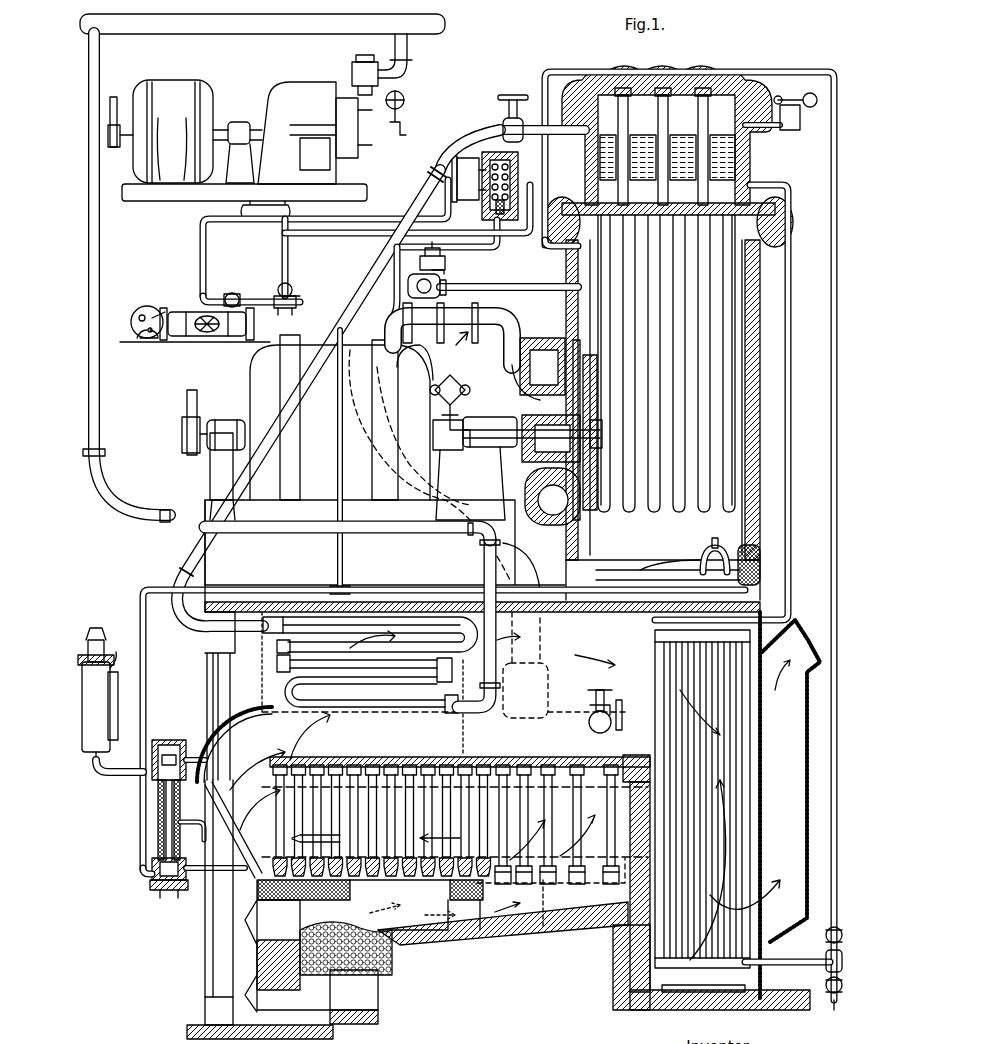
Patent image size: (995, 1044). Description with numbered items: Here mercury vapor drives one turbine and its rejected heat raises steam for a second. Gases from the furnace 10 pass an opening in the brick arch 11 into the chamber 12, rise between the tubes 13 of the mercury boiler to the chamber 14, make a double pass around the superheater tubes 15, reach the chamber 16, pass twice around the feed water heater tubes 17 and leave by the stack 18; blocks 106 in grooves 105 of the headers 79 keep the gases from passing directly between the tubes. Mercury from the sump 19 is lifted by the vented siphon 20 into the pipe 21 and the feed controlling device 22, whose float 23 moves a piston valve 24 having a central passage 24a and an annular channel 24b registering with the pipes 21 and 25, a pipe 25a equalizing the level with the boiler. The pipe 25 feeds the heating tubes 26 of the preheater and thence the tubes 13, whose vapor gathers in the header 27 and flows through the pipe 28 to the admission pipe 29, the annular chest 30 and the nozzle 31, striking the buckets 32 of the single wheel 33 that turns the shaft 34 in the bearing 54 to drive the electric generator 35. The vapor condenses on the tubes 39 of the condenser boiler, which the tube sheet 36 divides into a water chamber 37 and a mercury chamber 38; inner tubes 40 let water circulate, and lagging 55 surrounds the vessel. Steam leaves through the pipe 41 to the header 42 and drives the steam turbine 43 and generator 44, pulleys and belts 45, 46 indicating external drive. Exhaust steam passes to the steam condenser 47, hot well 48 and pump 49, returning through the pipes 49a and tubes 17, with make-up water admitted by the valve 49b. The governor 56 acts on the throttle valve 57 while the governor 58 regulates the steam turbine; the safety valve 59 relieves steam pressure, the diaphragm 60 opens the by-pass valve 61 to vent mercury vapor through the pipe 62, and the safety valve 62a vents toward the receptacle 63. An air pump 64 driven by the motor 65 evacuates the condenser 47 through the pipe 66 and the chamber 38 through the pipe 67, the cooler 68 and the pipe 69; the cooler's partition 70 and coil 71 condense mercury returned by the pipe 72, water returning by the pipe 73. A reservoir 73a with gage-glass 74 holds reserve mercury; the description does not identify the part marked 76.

The furnace 10 is at (289, 909).
The brick arch 11 is at (472, 908).
The chamber 12 is at (531, 903).
The tubes 13 is at (515, 800).
The chamber 14 is at (260, 758).
The superheater tubes 15 is at (452, 645).
The chamber 16 is at (556, 650).
The feed water heater tubes 17 is at (730, 732).
The stack 18 is at (725, 811).
The sump 19 is at (760, 562).
The vented siphon 20 is at (718, 570).
The pipe 21 is at (438, 597).
The feed controlling device 22 is at (158, 802).
The float 23 is at (170, 752).
The piston valve 24 is at (150, 882).
The central passage 24a is at (165, 897).
The annular channel 24b is at (150, 857).
The pipe 25 is at (200, 878).
The pipe 25a is at (160, 823).
The heating tubes 26 is at (300, 838).
The header 27 is at (482, 640).
The pipe 28 is at (536, 633).
The admission pipe 29 is at (530, 369).
The annular chest 30 is at (551, 445).
The nozzle 31 is at (580, 372).
The buckets 32 is at (668, 367).
The turbine wheel 33 is at (640, 402).
The shaft 34 is at (223, 426).
The electric generator 35 is at (385, 462).
The tube sheet 36 is at (742, 243).
The chamber 37 is at (728, 106).
The chamber 38 is at (666, 379).
The tubes 39 is at (725, 453).
The tube 40 is at (580, 192).
The pipe 41 is at (492, 131).
The steam header 42 is at (272, 30).
The steam turbine 43 is at (247, 150).
The electric generator 44 is at (197, 131).
The pulleys and belts 45 is at (110, 110).
The pulleys and belts 46 is at (187, 408).
The steam condenser 47 is at (325, 241).
The hot well 48 is at (290, 288).
The pump 49 is at (290, 302).
The pipes 49a is at (548, 72).
The valve 49b is at (824, 996).
The bearing 54 is at (206, 482).
The lagging 55 is at (760, 290).
The centrifugal governor 56 is at (445, 404).
The valve 57 is at (452, 334).
The centrifugal governor 58 is at (404, 101).
The safety valve 59 is at (789, 130).
The diaphragm 60 is at (445, 264).
The by-pass valve 61 is at (426, 284).
The pipe 62 is at (509, 279).
The safety valve 62a is at (599, 711).
The receptacle 63 is at (706, 993).
The air pump 64 is at (207, 324).
The motor 65 is at (158, 315).
The pipe 66 is at (246, 292).
The pipe 67 is at (556, 259).
The cooler 68 is at (522, 170).
The pipe 69 is at (367, 217).
The partition 70 is at (481, 206).
The coil of pipe 71 is at (507, 162).
The pipe 72 is at (386, 282).
The pipe 73 is at (384, 218).
The reservoir 73a is at (110, 663).
The gage-glass 74 is at (118, 705).
The floor 76 is at (538, 930).
The headers 79 is at (400, 892).
The grooves 105 is at (453, 892).
The blocks 106 is at (326, 892).